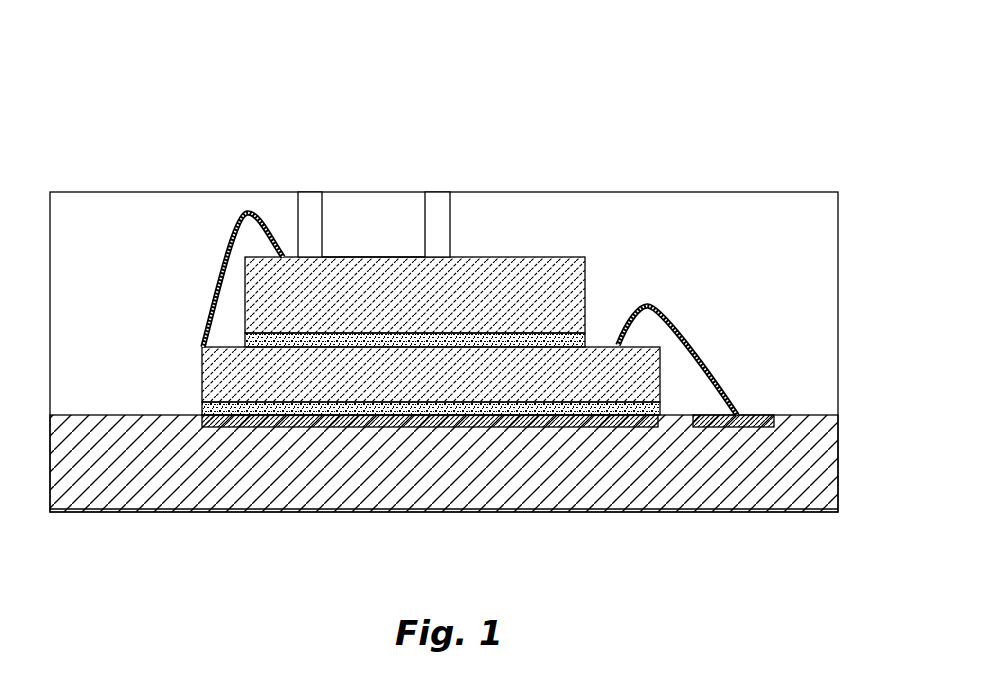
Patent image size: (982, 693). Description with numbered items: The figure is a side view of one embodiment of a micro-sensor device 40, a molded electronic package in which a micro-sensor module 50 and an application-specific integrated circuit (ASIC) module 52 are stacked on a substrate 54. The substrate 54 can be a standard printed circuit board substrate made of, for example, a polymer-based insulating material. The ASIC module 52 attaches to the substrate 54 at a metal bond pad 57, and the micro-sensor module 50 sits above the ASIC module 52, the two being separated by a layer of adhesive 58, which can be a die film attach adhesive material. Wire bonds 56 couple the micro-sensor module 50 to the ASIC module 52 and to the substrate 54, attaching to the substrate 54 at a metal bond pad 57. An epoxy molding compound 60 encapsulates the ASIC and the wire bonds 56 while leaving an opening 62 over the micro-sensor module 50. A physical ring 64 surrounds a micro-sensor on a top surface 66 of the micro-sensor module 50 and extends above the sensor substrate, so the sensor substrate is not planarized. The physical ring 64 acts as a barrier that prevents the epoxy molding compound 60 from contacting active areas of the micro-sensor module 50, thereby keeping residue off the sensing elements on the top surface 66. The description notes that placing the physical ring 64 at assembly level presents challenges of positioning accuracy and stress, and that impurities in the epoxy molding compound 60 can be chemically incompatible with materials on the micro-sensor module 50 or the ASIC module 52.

The micro-sensor device 40 is at (601, 97).
The micro-sensor module 50 is at (574, 273).
The ASIC module 52 is at (645, 389).
The substrate 54 is at (819, 501).
The wire bonds 56 is at (220, 277).
The metal bond pad 57 is at (745, 413).
The layer of adhesive 58 is at (598, 408).
The epoxy molding compound 60 is at (112, 226).
The opening 62 is at (387, 168).
The physical ring 64 is at (312, 198).
The top surface 66 is at (347, 257).